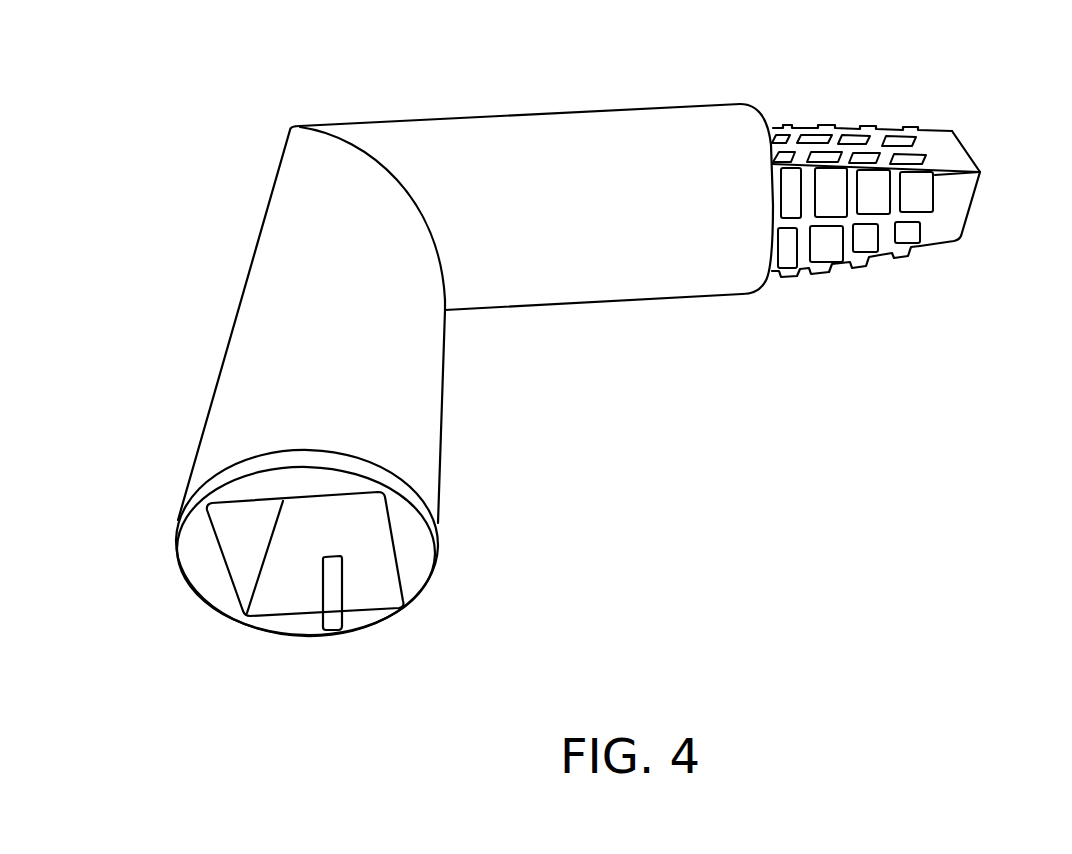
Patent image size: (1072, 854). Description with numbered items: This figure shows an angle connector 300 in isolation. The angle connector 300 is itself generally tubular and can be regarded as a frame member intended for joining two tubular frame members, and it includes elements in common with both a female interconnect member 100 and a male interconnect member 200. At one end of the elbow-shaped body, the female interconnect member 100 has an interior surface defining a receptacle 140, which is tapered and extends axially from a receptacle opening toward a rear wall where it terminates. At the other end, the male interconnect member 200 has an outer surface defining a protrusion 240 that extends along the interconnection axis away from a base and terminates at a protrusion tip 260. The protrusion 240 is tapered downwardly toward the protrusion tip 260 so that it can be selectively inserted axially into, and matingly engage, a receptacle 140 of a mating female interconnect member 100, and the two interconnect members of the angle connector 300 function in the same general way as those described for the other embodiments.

The female interconnect member 100 is at (202, 558).
The receptacle 140 is at (292, 547).
The male interconnect member 200 is at (787, 127).
The protrusion 240 is at (872, 127).
The protrusion tip 260 is at (950, 147).
The angle connector 300 is at (303, 183).